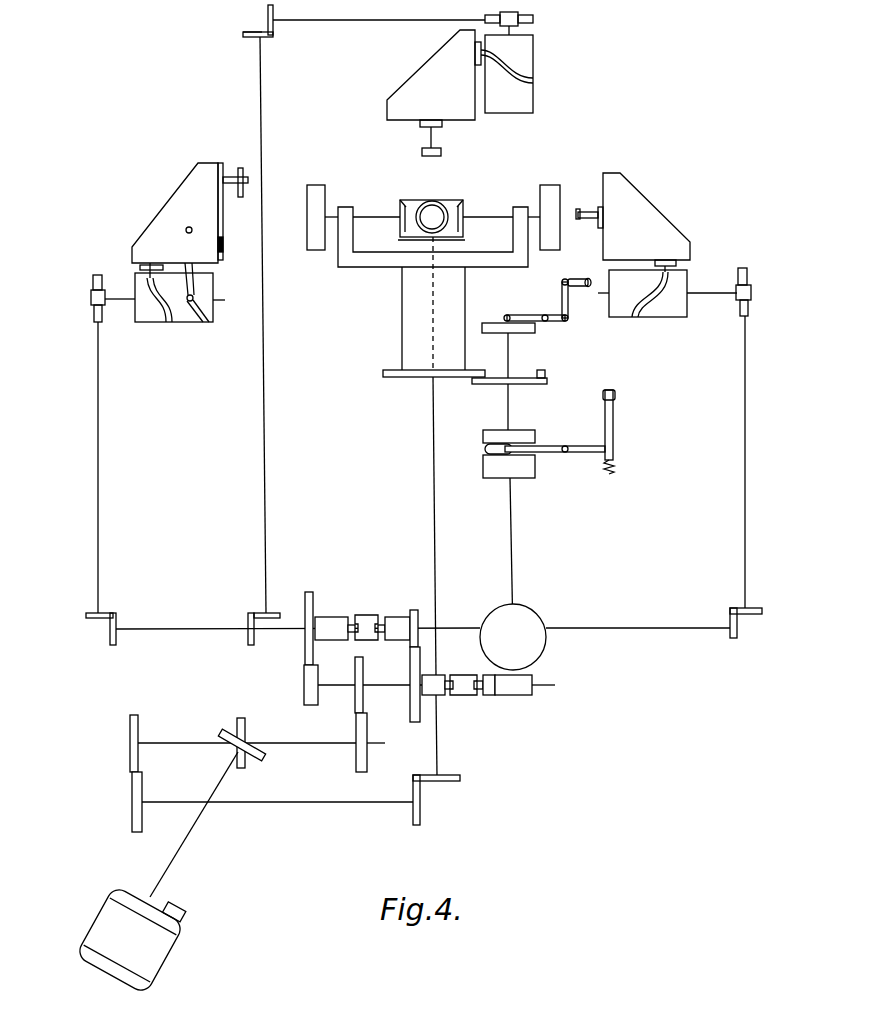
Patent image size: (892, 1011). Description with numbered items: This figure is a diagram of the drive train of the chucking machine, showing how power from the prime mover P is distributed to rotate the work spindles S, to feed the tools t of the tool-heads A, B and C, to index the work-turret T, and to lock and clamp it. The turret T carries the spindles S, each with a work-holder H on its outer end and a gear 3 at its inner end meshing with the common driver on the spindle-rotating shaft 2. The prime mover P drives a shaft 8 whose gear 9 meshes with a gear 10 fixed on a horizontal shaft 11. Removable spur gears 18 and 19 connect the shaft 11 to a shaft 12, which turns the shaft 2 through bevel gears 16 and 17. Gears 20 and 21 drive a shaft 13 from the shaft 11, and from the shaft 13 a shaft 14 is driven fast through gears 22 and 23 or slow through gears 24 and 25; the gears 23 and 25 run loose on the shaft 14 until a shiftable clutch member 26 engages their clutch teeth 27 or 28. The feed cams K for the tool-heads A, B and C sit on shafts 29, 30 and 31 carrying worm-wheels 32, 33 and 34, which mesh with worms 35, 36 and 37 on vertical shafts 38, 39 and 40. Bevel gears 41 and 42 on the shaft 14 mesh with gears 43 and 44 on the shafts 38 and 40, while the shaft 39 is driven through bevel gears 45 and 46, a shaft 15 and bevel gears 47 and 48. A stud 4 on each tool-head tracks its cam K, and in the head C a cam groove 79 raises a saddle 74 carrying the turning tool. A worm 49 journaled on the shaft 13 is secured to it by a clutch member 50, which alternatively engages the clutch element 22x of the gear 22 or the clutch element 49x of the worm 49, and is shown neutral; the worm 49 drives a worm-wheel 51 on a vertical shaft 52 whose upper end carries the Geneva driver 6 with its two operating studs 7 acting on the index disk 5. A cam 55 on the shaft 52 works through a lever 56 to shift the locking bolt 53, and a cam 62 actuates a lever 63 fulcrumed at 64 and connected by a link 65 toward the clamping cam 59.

The rotatable shaft 2 is at (434, 470).
The gear 3 is at (432, 200).
The stud 4 is at (150, 265).
The index disk 5 is at (392, 377).
The driver 6 is at (545, 384).
The operating studs 7 is at (545, 374).
The shaft 8 is at (182, 854).
The gear 9 is at (263, 757).
The gear 10 is at (245, 724).
The shaft 11 is at (308, 744).
The shaft 12 is at (315, 803).
The shaft 13 is at (396, 686).
The shaft 14 is at (190, 629).
The shaft 15 is at (264, 523).
The bevel gear 16 is at (420, 815).
The bevel gear 17 is at (458, 780).
The spur gear 18 is at (130, 720).
The spur gear 19 is at (132, 824).
The gear 20 is at (367, 760).
The gear 21 is at (355, 700).
The gear 22 is at (416, 722).
The clutch element 22x is at (440, 695).
The gear 23 is at (416, 613).
The gear 24 is at (304, 682).
The gear 25 is at (305, 657).
The shiftable clutch member 26 is at (342, 617).
The clutch teeth 27 is at (392, 616).
The clutch teeth 28 is at (351, 632).
The shaft 29 is at (712, 294).
The shaft 30 is at (510, 113).
The shaft 31 is at (222, 302).
The worm-wheel 32 is at (747, 273).
The worm-wheel 33 is at (533, 18).
The worm-wheel 34 is at (93, 278).
The worm 35 is at (751, 292).
The worm 36 is at (512, 28).
The worm 37 is at (94, 312).
The shaft 38 is at (746, 422).
The shaft 39 is at (358, 22).
The shaft 40 is at (99, 470).
The bevel gear 41 is at (737, 633).
The bevel gear 42 is at (116, 640).
The bevel gear 43 is at (762, 611).
The bevel gear 44 is at (108, 613).
The bevel gear 45 is at (248, 630).
The bevel gear 46 is at (272, 613).
The bevel gear 47 is at (247, 37).
The bevel gear 48 is at (275, 35).
The worm 49 is at (522, 695).
The clutch element 49x is at (490, 695).
The clutch member 50 is at (463, 675).
The worm-wheel 51 is at (538, 614).
The shaft 52 is at (512, 555).
The bolt 53 is at (614, 425).
The cam 55 is at (540, 466).
The lever 56 is at (583, 446).
The cam 59 is at (586, 277).
The cam 62 is at (492, 323).
The lever 63 is at (563, 322).
The fulcrum 64 is at (545, 315).
The link 65 is at (568, 296).
The saddle 74 is at (223, 222).
The cam groove 79 is at (206, 322).
The tool-head A is at (644, 216).
The tool-head B is at (434, 75).
The tool-head C is at (175, 213).
The rotary cam K is at (535, 58).
The work-holder H is at (316, 185).
The work spindle S is at (377, 217).
The work-turret T is at (367, 267).
The prime mover P is at (133, 934).
The tool t is at (442, 152).